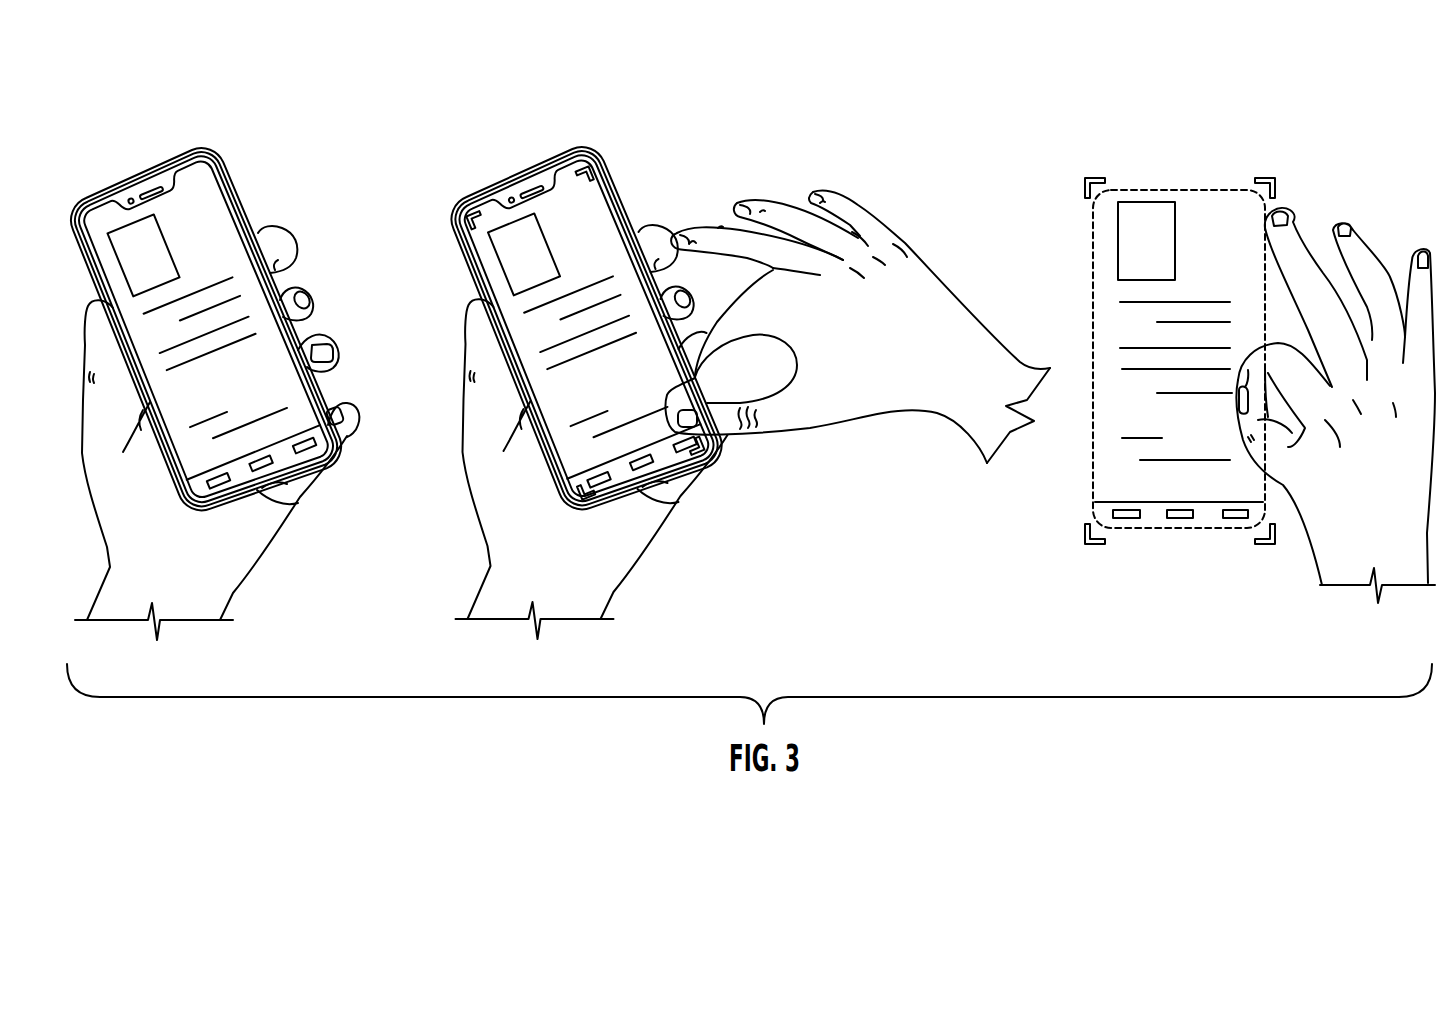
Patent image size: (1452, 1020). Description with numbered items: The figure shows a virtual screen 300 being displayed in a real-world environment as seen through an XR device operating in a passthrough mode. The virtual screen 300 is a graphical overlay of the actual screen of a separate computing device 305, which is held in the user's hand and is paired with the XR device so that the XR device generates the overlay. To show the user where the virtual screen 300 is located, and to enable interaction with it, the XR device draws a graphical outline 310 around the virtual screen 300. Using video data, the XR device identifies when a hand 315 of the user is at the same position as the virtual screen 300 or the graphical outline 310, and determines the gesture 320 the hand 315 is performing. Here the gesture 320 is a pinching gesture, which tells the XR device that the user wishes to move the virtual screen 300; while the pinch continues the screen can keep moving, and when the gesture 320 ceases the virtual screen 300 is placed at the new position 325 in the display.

The virtual screen 300 is at (222, 150).
The separate computing device 305 is at (330, 333).
The graphical outline 310 is at (611, 150).
The hand 315 is at (893, 222).
The gesture 320 is at (715, 418).
The new position 325 is at (1274, 174).